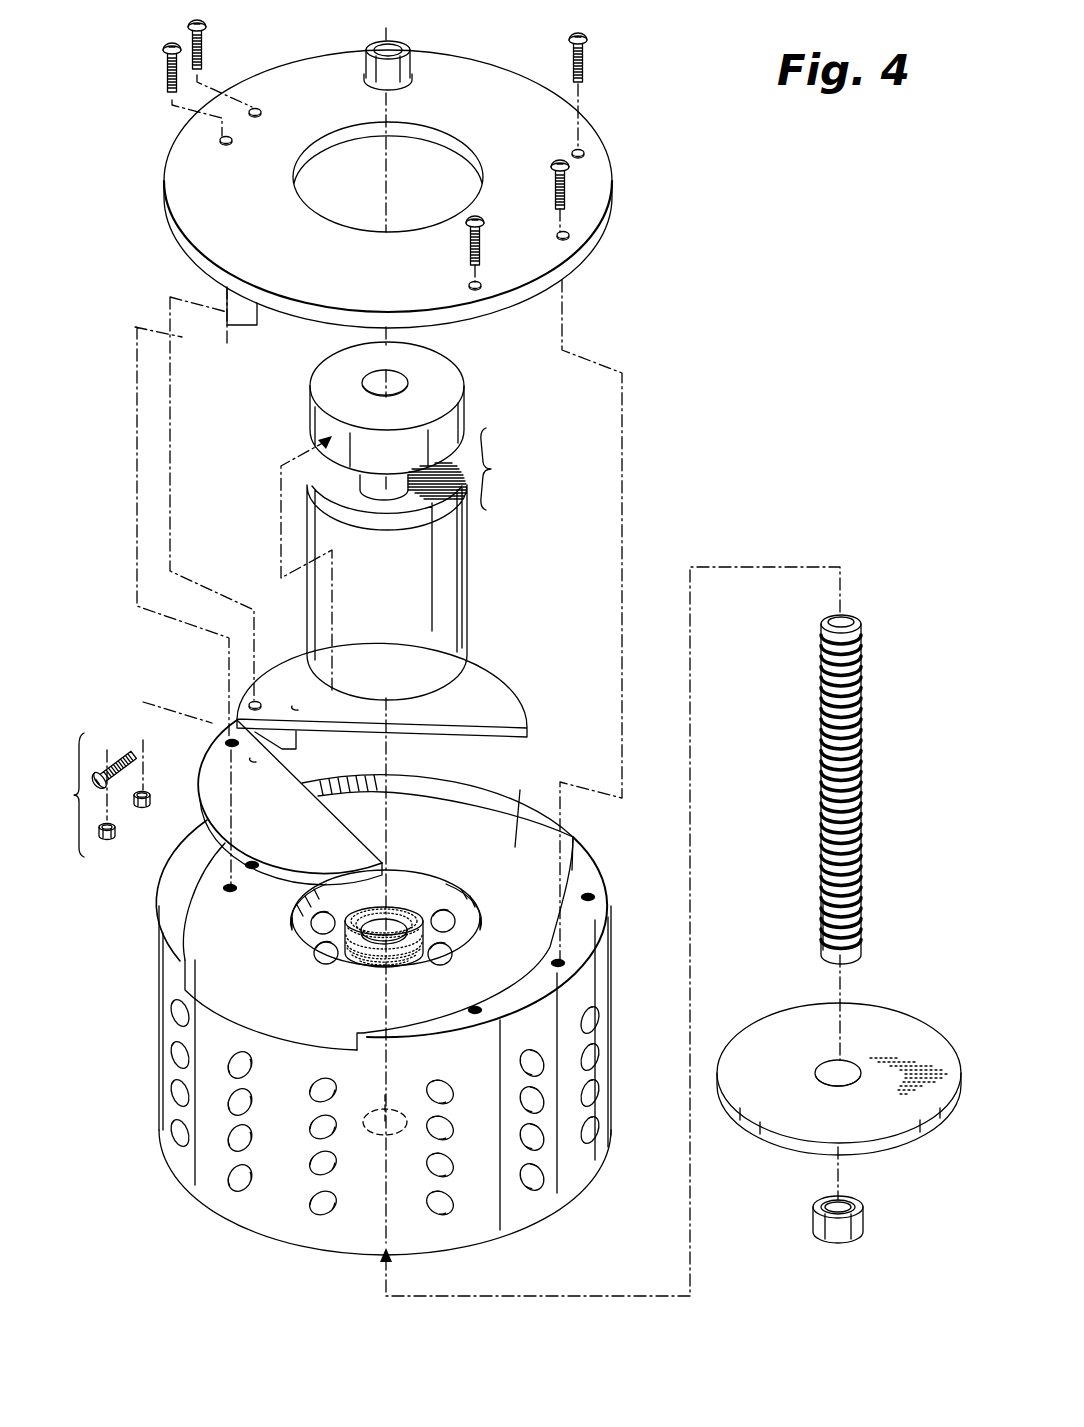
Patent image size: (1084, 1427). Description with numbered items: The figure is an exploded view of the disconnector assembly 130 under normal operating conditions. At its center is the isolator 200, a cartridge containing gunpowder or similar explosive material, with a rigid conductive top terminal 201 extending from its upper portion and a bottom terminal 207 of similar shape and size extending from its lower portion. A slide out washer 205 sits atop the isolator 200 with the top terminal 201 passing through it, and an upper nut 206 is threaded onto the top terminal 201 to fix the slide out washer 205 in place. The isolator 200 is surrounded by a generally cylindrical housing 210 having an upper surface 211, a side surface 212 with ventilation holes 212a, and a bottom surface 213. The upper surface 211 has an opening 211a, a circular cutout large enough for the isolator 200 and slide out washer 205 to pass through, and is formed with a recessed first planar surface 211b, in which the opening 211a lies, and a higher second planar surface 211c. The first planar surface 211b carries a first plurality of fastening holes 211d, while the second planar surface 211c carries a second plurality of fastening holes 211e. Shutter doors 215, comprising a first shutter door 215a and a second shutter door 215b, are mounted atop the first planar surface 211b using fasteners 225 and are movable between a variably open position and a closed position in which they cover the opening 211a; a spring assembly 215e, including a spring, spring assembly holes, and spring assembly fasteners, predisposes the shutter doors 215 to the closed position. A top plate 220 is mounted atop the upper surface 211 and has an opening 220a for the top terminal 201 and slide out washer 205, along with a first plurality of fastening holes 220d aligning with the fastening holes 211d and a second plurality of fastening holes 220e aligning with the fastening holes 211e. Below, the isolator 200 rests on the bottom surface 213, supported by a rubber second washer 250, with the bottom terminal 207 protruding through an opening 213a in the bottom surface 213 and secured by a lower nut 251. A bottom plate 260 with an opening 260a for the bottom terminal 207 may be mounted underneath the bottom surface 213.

The disconnector assembly 130 is at (760, 320).
The isolator 200 is at (456, 586).
The top terminal 201 is at (860, 630).
The slide out washer 205 is at (308, 397).
The upper nut 206 is at (411, 72).
The bottom terminal 207 is at (822, 936).
The housing 210 is at (136, 1033).
The upper surface 211 is at (488, 796).
The opening 211a is at (422, 902).
The first planar surface 211b is at (515, 847).
The second planar surface 211c is at (585, 870).
The first plurality of fastening holes 211d is at (252, 860).
The second plurality of fastening holes 211e is at (590, 895).
The side surface 212 is at (160, 1118).
The ventilation holes 212a is at (596, 1018).
The bottom surface 213 is at (255, 1237).
The opening 213a is at (396, 1100).
The shutter doors 215 is at (210, 716).
The first shutter door 215a is at (497, 717).
The second shutter door 215b is at (332, 848).
The spring assembly 215e is at (67, 792).
The top plate 220 is at (160, 192).
The opening 220a is at (365, 166).
The first plurality of fastening holes 220d is at (256, 108).
The second plurality of fastening holes 220e is at (580, 150).
The fasteners 225 is at (590, 42).
The second washer 250 is at (392, 905).
The lower nut 251 is at (818, 1226).
The bottom plate 260 is at (903, 1012).
The opening 260a is at (828, 1068).